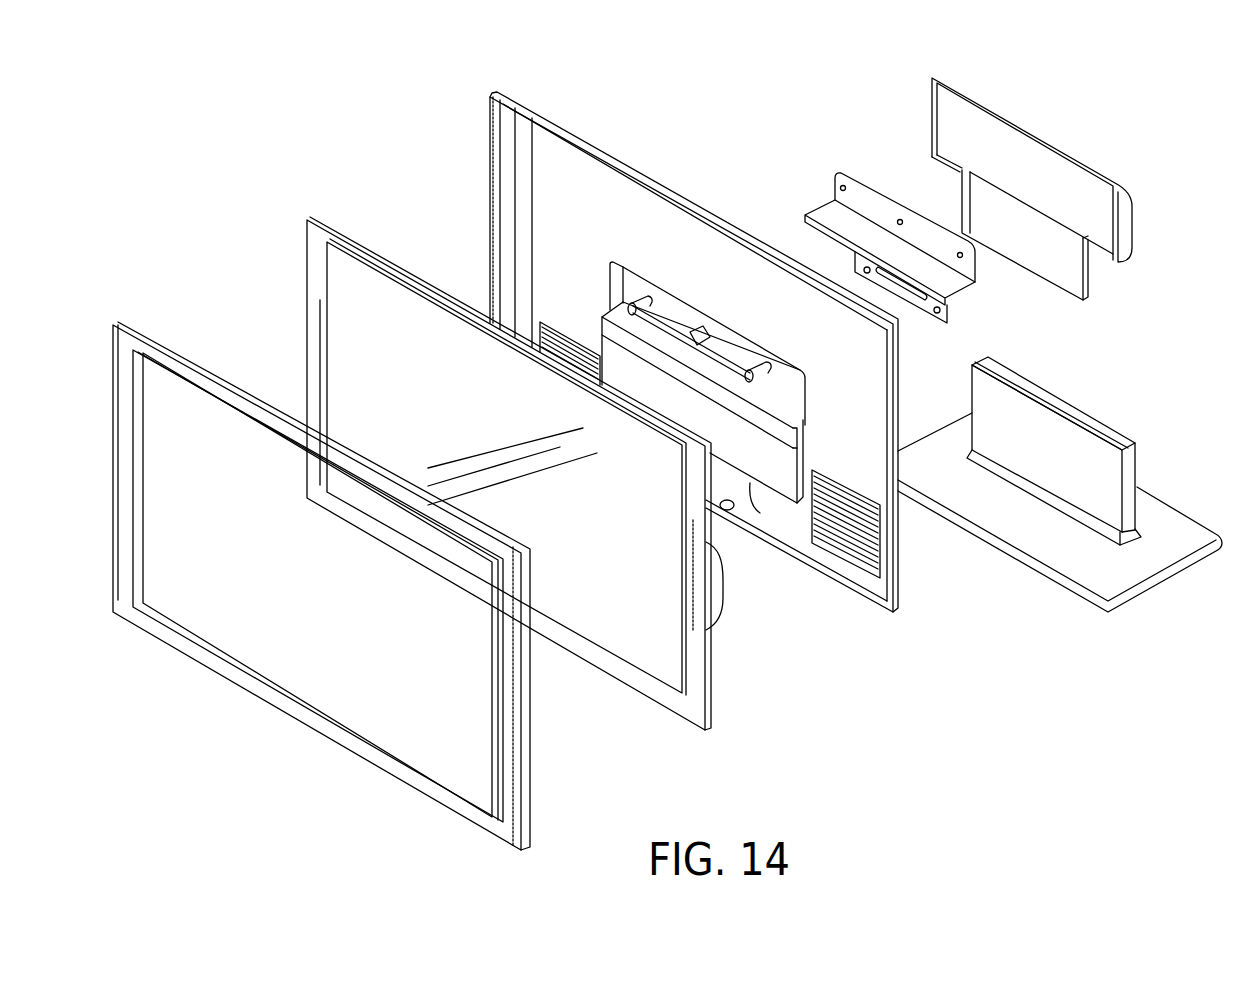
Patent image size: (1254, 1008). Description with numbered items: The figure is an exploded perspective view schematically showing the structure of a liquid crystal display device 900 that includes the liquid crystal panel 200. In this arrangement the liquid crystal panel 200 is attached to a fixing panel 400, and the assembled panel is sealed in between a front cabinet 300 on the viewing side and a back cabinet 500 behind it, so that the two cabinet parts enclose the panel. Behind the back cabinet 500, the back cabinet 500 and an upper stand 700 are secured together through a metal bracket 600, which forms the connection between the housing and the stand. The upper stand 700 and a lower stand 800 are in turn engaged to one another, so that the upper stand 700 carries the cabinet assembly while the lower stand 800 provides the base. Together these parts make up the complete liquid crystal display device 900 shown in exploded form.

The liquid crystal panel 200 is at (350, 297).
The front cabinet 300 is at (160, 343).
The fixing panel 400 is at (676, 705).
The back cabinet 500 is at (578, 176).
The metal bracket 600 is at (862, 196).
The upper stand 700 is at (1040, 158).
The lower stand 800 is at (1032, 537).
The liquid crystal display device 900 is at (232, 143).